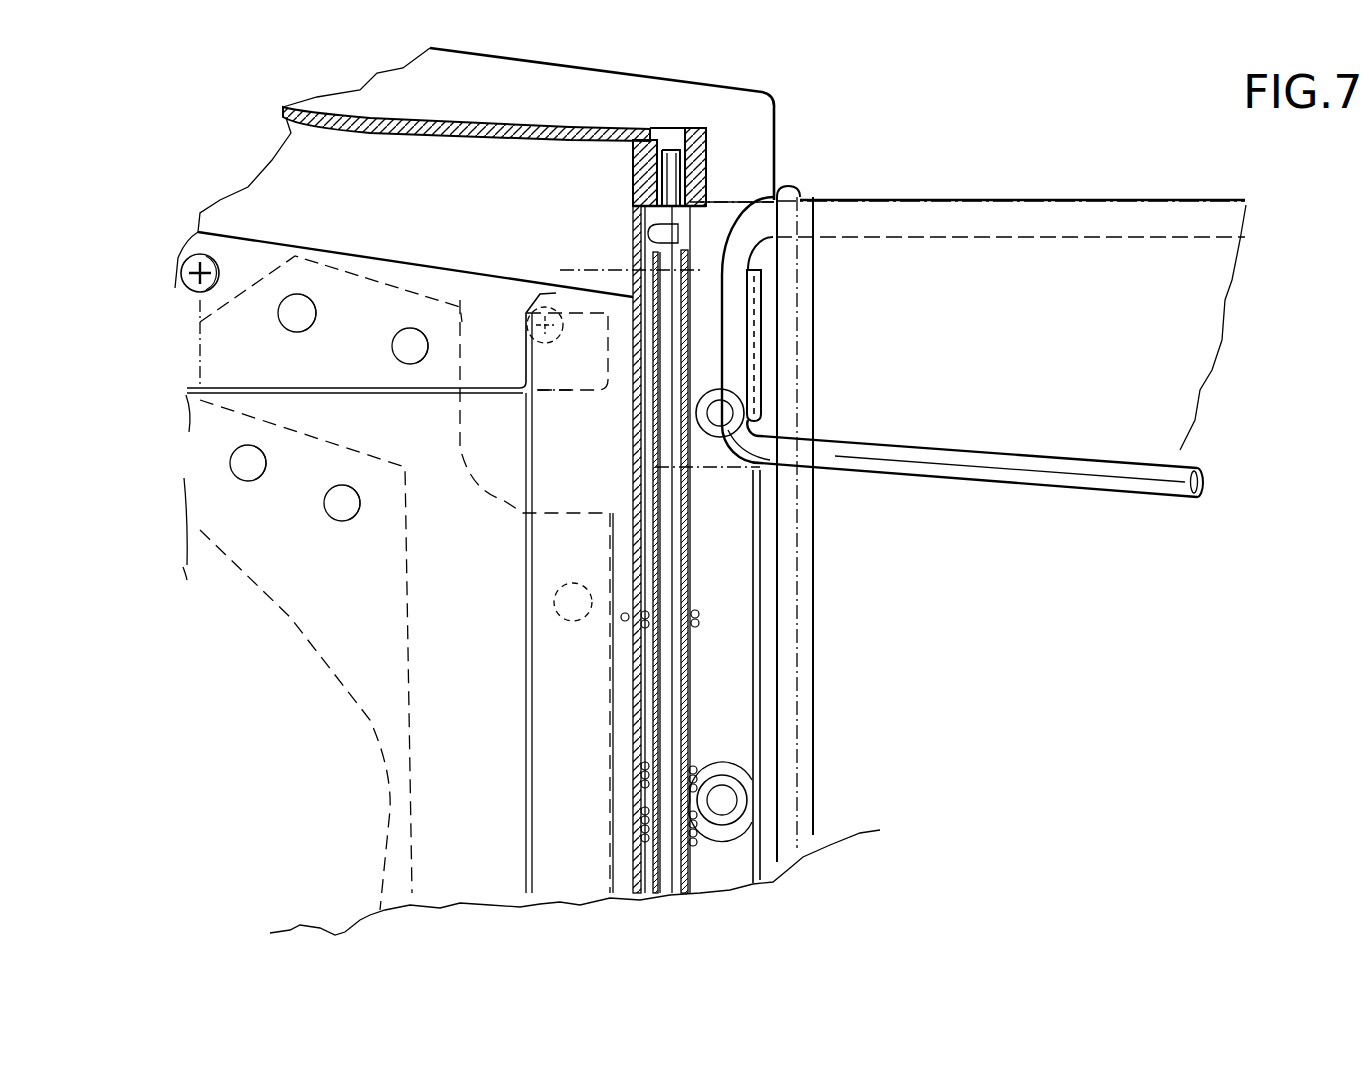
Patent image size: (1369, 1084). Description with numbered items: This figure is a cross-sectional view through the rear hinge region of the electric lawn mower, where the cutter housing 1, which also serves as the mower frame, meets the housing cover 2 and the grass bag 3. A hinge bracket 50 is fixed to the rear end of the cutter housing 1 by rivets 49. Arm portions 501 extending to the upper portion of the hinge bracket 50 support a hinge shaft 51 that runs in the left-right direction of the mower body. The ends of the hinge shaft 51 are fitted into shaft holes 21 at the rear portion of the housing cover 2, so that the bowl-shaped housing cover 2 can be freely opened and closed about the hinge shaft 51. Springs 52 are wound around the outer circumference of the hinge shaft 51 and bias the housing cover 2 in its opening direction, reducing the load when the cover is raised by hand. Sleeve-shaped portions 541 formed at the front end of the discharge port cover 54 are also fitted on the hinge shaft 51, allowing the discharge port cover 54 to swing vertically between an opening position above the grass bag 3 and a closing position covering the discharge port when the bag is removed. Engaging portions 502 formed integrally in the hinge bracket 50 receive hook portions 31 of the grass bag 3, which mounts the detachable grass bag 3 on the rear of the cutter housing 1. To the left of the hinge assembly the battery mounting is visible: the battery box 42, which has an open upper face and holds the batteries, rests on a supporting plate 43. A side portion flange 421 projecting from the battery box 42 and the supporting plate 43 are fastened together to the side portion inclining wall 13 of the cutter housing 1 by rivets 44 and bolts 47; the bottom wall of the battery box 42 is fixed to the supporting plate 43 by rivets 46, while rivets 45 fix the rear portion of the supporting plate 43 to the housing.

The cutter housing 1 is at (779, 136).
The side portion inclining wall 13 is at (340, 189).
The housing cover 2 is at (428, 126).
The shaft hole 21 is at (662, 147).
The grass bag 3 is at (1084, 197).
The hook portion 31 is at (730, 294).
The battery box 42 is at (388, 253).
The side portion flange 421 is at (293, 255).
The supporting plate 43 is at (372, 722).
The rivet 44 is at (305, 300).
The rivet 45 is at (570, 624).
The rivet 46 is at (253, 472).
The bolt 47 is at (180, 275).
The rivet 49 is at (716, 438).
The hinge bracket 50 is at (766, 621).
The arm portion 501 is at (655, 492).
The engaging portion 502 is at (762, 344).
The hinge shaft 51 is at (665, 410).
The spring 52 is at (694, 612).
The discharge port cover 54 is at (717, 194).
The sleeve-shaped portion 541 is at (650, 296).